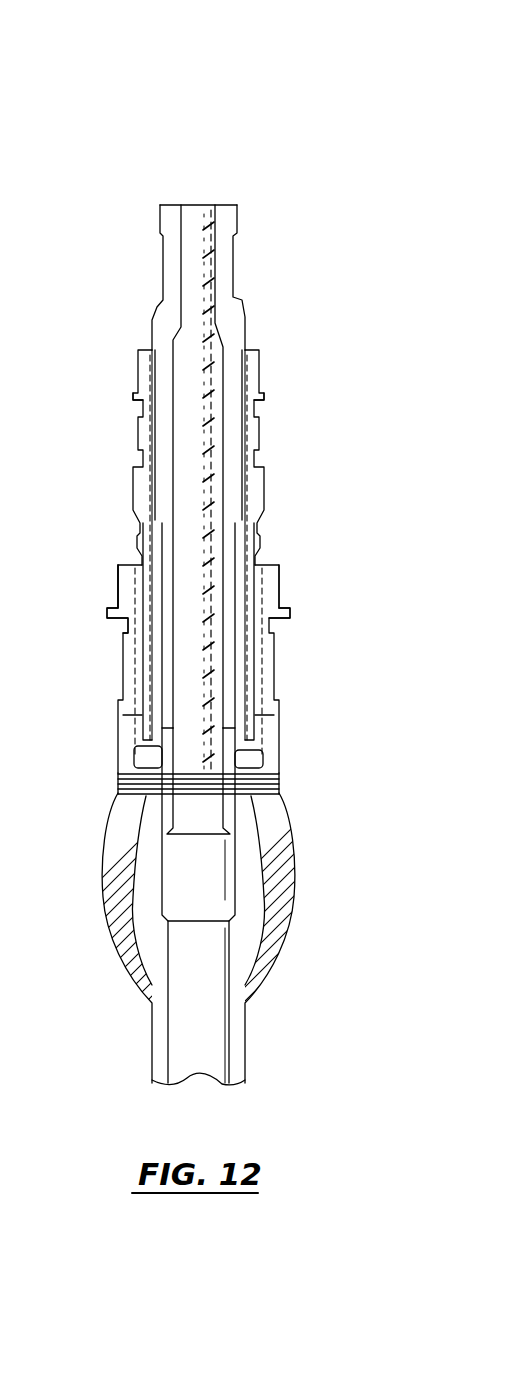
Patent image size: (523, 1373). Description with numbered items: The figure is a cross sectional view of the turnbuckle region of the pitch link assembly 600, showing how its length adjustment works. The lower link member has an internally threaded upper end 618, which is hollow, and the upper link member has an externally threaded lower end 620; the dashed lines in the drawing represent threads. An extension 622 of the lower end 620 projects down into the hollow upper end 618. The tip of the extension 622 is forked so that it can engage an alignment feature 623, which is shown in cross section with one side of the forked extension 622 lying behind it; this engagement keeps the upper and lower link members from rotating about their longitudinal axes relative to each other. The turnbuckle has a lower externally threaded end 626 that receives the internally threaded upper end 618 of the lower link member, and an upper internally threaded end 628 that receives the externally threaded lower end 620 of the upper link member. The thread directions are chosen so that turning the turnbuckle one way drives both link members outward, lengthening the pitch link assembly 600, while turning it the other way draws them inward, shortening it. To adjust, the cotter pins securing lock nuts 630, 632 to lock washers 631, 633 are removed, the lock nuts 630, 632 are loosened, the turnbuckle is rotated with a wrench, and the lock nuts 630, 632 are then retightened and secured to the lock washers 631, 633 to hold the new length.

The pitch link assembly 600 is at (197, 33).
The upper end of lower link member 618 is at (268, 690).
The lower end of upper link member 620 is at (185, 452).
The extension 622 is at (163, 757).
The alignment feature 623 is at (241, 778).
The lower externally threaded end 626 is at (140, 639).
The upper internally threaded end 628 is at (256, 435).
The lock nut 630 is at (141, 373).
The lock washer 631 is at (131, 399).
The lock nut 632 is at (273, 572).
The lock washer 633 is at (271, 617).